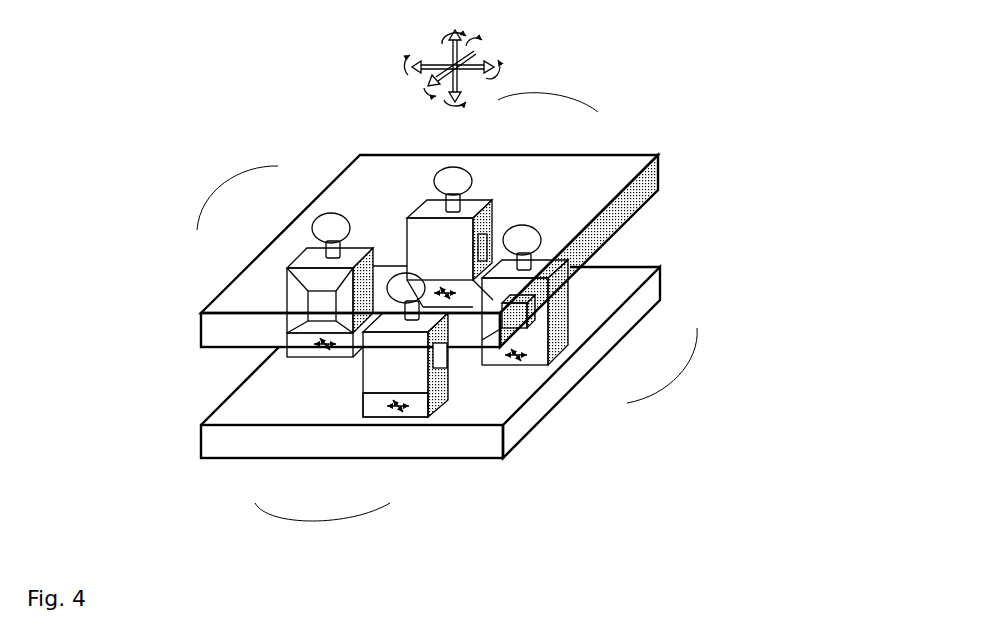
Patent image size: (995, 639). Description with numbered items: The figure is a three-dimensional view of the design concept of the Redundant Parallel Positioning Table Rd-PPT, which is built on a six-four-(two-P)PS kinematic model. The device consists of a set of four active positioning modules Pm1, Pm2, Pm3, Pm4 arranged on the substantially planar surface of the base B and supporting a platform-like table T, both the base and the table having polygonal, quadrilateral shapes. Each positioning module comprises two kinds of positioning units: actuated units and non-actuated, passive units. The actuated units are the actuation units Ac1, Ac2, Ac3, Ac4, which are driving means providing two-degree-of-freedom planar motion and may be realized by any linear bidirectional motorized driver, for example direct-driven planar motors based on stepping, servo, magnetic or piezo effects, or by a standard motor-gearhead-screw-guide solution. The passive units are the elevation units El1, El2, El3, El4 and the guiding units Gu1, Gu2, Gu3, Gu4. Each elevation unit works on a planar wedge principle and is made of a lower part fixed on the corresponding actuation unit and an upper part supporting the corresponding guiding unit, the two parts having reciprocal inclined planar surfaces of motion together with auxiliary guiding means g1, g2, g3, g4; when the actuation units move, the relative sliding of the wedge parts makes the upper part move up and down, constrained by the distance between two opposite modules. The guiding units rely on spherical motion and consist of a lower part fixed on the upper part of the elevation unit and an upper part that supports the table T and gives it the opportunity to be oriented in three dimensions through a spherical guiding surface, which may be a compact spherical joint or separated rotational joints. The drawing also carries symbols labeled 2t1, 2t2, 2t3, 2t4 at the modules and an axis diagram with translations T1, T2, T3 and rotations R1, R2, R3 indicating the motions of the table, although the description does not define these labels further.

The table T is at (658, 172).
The base B is at (520, 423).
The Redundant Parallel Positioning Table Rd-PPT is at (663, 478).
The first positioning module Pm1 is at (311, 535).
The second positioning module Pm2 is at (674, 402).
The third positioning module Pm3 is at (562, 86).
The fourth positioning module Pm4 is at (236, 168).
The guiding unit of the first module Gu1 is at (406, 290).
The guiding unit of the second module Gu2 is at (533, 245).
The guiding unit of the third module Gu3 is at (455, 178).
The guiding unit of the fourth module Gu4 is at (335, 230).
The elevation unit of the first module El1 is at (405, 365).
The elevation unit of the second module El2 is at (552, 298).
The elevation unit of the third module El3 is at (480, 207).
The elevation unit of the fourth module El4 is at (320, 257).
The actuation unit of the first module Ac1 is at (398, 412).
The actuation unit of the second module Ac2 is at (552, 344).
The actuation unit of the third module Ac3 is at (493, 263).
The actuation unit of the fourth module Ac4 is at (287, 328).
The auxiliary guiding means of the first module g1 is at (453, 375).
The auxiliary guiding means of the second module g2 is at (535, 333).
The auxiliary guiding means of the third module g3 is at (503, 223).
The auxiliary guiding means of the fourth module g4 is at (305, 308).
The two-translation joint of first module 2t1 is at (407, 410).
The two-translation joint of second module 2t2 is at (518, 363).
The two-translation joint of third module 2t3 is at (441, 288).
The two-translation joint of fourth module 2t4 is at (300, 340).
The translation axis 1 T1 is at (433, 80).
The translation axis 2 T2 is at (473, 62).
The translation axis 3 T3 is at (452, 48).
The rotation about axis 1 R1 is at (435, 90).
The rotation about axis 2 R2 is at (483, 69).
The rotation about axis 3 R3 is at (442, 28).